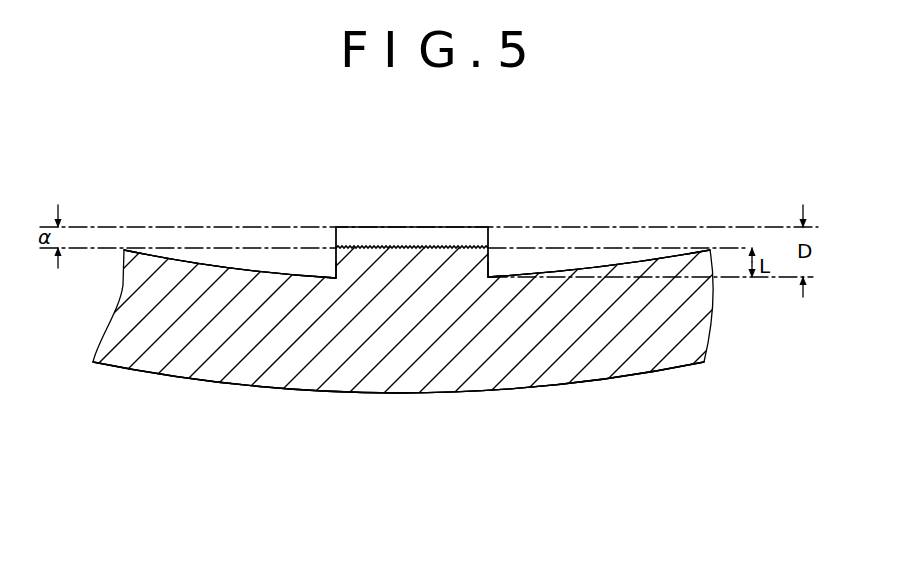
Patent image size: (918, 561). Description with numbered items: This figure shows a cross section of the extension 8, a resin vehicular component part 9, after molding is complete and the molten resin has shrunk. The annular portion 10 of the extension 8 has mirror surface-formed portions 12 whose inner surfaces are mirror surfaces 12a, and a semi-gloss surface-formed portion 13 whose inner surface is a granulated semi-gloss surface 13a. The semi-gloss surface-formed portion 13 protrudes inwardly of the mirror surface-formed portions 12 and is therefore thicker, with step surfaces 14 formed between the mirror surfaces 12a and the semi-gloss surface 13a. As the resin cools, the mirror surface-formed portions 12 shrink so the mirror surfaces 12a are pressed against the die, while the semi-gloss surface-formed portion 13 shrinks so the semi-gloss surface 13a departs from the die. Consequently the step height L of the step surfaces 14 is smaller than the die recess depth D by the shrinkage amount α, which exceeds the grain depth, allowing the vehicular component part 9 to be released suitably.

The extension 8 is at (560, 367).
The vehicular component part 9 is at (607, 532).
The annular portion 10 is at (177, 365).
The mirror surface-formed portion 12 is at (235, 323).
The mirror surface 12a is at (157, 258).
The semi-gloss surface-formed portion 13 is at (402, 257).
The semi-gloss surface 13a is at (467, 247).
The step surface 14 is at (335, 267).